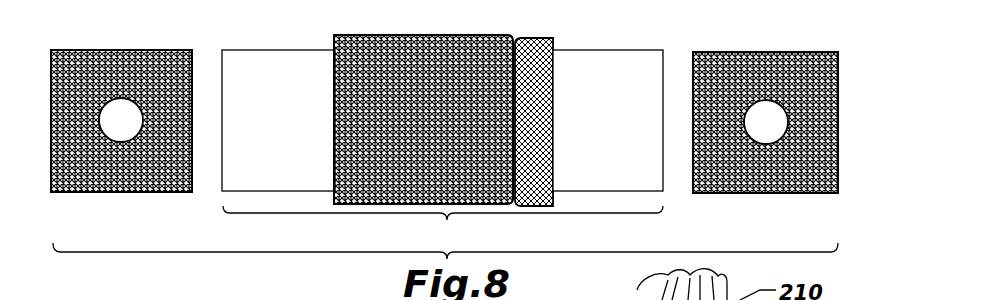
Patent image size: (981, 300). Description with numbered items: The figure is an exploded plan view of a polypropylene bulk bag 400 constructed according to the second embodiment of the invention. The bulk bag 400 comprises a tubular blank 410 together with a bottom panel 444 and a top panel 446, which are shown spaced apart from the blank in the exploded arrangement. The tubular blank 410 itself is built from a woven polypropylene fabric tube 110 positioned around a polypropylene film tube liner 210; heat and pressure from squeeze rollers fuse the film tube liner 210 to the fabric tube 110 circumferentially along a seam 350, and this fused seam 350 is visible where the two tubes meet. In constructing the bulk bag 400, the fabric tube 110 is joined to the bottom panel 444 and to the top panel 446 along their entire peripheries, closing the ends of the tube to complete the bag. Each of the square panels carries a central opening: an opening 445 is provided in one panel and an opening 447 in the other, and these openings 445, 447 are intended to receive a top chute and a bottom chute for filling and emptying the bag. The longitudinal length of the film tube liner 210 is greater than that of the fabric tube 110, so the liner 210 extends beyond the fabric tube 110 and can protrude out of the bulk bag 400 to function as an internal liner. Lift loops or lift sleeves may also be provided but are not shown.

The bottom panel 444 is at (101, 50).
The opening 445 is at (120, 108).
The polypropylene film tube liner 210 is at (282, 50).
The woven polypropylene fabric tube 110 is at (420, 36).
The seam 350 is at (516, 38).
The bulk bag 400 is at (601, 43).
The tubular blank 410 is at (443, 227).
The top panel 446 is at (840, 135).
The opening 447 is at (762, 115).